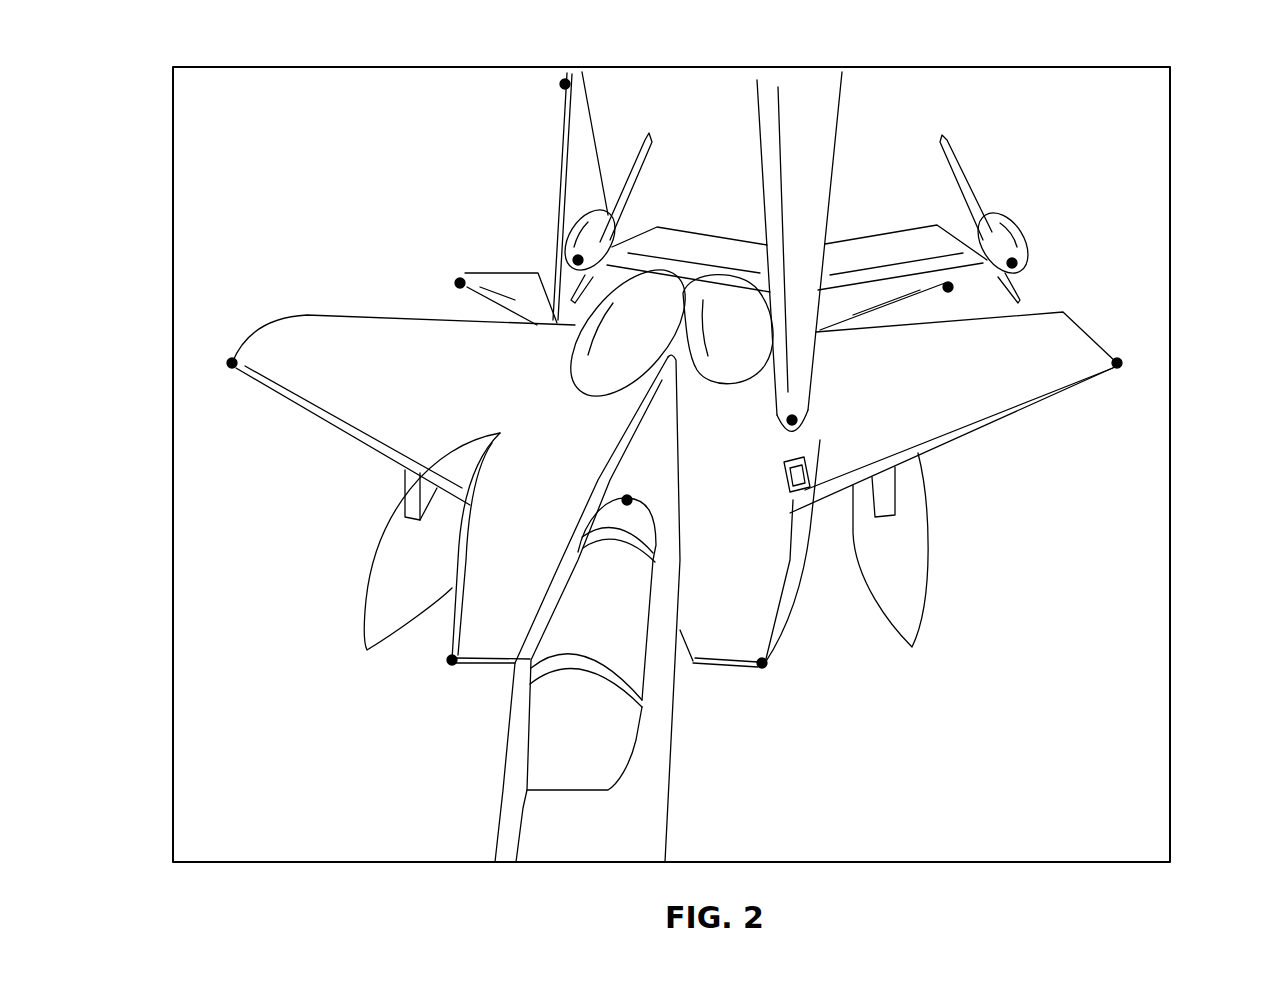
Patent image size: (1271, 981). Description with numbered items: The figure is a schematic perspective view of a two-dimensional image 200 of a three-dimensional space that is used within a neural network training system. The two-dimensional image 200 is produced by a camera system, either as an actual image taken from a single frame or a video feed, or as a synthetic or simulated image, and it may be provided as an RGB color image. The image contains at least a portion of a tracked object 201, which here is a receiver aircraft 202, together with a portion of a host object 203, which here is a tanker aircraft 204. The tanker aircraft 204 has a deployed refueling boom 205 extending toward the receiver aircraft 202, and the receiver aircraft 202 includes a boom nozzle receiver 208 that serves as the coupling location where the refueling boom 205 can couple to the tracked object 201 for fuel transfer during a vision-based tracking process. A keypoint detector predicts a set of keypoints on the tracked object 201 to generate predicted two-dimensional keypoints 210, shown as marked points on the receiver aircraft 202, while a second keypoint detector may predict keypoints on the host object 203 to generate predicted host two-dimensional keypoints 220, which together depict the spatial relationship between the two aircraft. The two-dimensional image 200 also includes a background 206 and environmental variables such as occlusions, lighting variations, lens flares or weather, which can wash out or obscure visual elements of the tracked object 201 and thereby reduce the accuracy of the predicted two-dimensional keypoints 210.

The two-dimensional image 200 is at (910, 58).
The tracked object 201 is at (686, 753).
The receiver aircraft 202 is at (640, 813).
The host object 203 is at (842, 138).
The tanker aircraft 204 is at (768, 136).
The refueling boom 205 is at (752, 189).
The background 206 is at (1058, 151).
The boom nozzle receiver 208 is at (797, 468).
The predicted 2D keypoints 210 is at (565, 84).
The predicted host 2D keypoints 220 is at (578, 260).